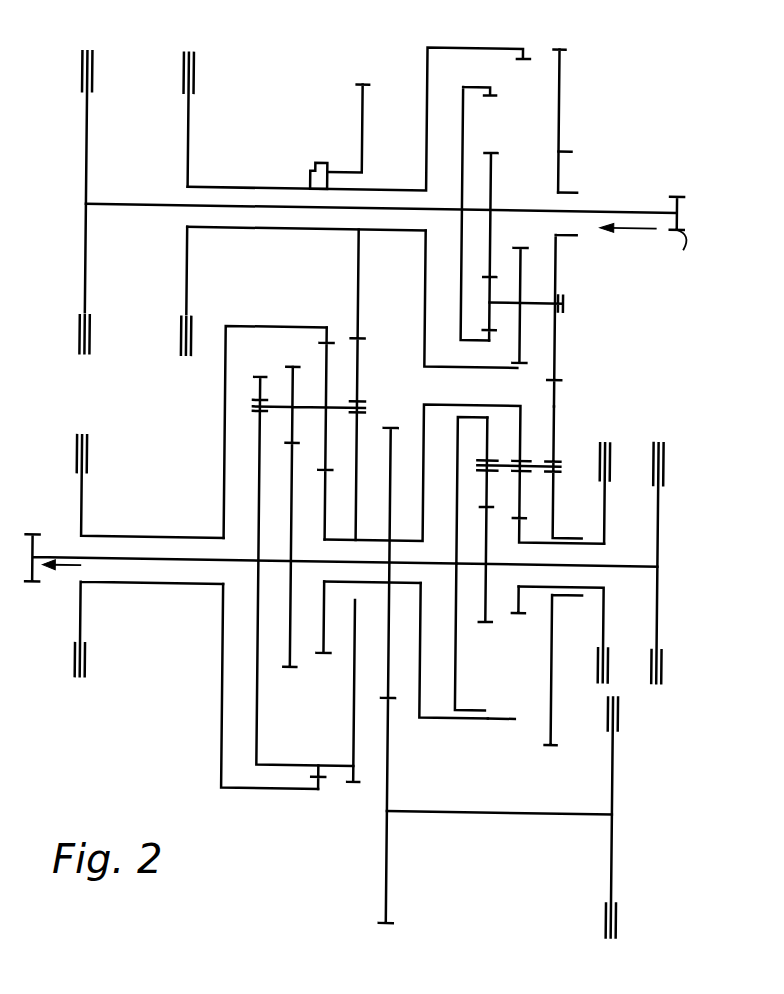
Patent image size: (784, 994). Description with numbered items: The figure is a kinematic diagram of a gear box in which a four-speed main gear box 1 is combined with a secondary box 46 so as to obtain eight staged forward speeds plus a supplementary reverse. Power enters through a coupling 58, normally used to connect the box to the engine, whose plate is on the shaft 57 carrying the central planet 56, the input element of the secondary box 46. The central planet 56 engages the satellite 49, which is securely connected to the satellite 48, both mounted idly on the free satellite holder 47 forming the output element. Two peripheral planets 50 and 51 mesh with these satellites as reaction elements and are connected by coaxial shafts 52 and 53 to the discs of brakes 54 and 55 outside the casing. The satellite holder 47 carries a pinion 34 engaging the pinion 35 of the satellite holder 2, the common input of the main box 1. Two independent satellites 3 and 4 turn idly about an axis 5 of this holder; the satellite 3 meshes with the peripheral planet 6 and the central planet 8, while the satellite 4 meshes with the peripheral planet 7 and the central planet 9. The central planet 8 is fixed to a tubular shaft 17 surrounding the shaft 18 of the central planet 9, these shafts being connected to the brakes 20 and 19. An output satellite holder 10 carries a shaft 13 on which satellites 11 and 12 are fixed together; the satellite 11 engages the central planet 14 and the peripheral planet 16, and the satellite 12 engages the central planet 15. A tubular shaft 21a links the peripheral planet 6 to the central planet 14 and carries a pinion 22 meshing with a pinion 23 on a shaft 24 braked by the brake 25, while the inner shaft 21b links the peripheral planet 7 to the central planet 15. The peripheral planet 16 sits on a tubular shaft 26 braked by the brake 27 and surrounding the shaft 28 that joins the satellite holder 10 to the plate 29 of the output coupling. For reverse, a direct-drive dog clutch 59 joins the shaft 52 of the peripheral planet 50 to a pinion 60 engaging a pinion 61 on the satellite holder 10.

The main gear box 1 is at (560, 406).
The satellite holder 2 is at (553, 448).
The satellite 3 is at (532, 489).
The satellite 4 is at (497, 477).
The axis 5 is at (503, 460).
The peripheral planet 6 is at (517, 716).
The peripheral planet 7 is at (494, 692).
The central planet 8 is at (520, 611).
The central planet 9 is at (488, 621).
The satellite holder 10 is at (353, 705).
The satellite 11 is at (339, 378).
The satellite 12 is at (314, 361).
The shaft 13 is at (347, 403).
The central planet 14 is at (276, 508).
The central planet 15 is at (259, 514).
The peripheral planet 16 is at (320, 765).
The tubular shaft 17 is at (593, 587).
The shaft 18 is at (590, 563).
The brake 19 is at (670, 600).
The brake 20 is at (622, 497).
The tubular shaft 21a is at (417, 545).
The shaft 21b is at (386, 564).
The pinion 22 is at (394, 618).
The pinion 23 is at (390, 754).
The shaft 24 is at (521, 796).
The brake 25 is at (629, 831).
The tubular shaft 26 is at (186, 537).
The brake 27 is at (83, 490).
The shaft 28 is at (157, 563).
The plate 29 is at (38, 575).
The pinion 34 is at (556, 48).
The pinion 35 is at (552, 748).
The secondary box 46 is at (587, 171).
The satellite holder 47 is at (555, 277).
The satellite 48 is at (531, 246).
The satellite 49 is at (486, 290).
The peripheral planet 50 is at (503, 367).
The peripheral planet 51 is at (469, 341).
The coaxial shaft 52 is at (400, 231).
The coaxial shaft 53 is at (375, 208).
The brake 54 is at (186, 287).
The brake 55 is at (85, 305).
The central planet 56 is at (489, 193).
The shaft 57 is at (583, 211).
The coupling 58 is at (673, 259).
The direct-drive dog clutch 59 is at (316, 164).
The pinion 60 is at (357, 326).
The pinion 61 is at (354, 784).